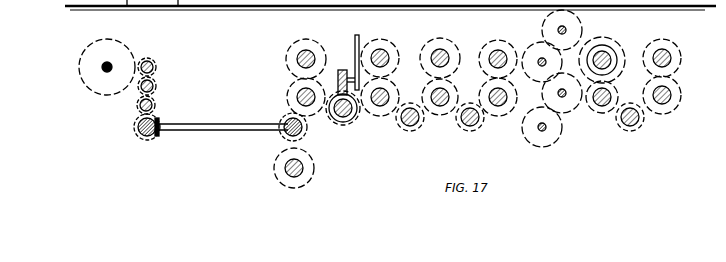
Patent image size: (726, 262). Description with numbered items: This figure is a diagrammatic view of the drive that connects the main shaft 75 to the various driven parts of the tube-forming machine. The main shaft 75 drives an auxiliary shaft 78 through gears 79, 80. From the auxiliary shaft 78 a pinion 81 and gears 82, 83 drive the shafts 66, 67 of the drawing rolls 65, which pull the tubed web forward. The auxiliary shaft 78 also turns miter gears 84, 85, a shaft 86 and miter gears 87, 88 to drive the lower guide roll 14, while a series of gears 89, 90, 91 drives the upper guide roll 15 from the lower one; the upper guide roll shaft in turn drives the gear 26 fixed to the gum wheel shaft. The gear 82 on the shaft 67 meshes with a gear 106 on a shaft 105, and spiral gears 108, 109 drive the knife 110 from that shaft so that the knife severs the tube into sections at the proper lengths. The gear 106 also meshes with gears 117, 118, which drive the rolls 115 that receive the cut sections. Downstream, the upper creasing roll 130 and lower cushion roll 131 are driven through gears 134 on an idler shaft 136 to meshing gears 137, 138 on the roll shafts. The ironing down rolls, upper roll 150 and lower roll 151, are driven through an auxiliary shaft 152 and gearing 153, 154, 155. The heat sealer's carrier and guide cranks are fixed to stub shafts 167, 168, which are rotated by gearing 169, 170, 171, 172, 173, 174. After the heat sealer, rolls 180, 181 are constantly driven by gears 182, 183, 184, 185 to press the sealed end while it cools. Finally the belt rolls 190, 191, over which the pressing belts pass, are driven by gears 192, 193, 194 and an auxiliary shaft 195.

The gear 26 is at (85, 50).
The upper guide roll 15 is at (159, 53).
The gear 91 is at (157, 67).
The gear 90 is at (157, 86).
The gear 89 is at (156, 105).
The miter gear 88 is at (148, 138).
The lower guide roll 14 is at (157, 138).
The miter gear 87 is at (158, 133).
The shaft 86 is at (205, 125).
The upper drawing roll shaft 66 is at (305, 54).
The gear 83 is at (320, 45).
The lower drawing roll shaft 67 is at (289, 86).
The drawing rolls 65 is at (303, 95).
The gear 80 is at (292, 129).
The auxiliary shaft 78 is at (292, 129).
The miter gear 85 is at (292, 138).
The miter gear 84 is at (305, 138).
The pinion 81 is at (301, 128).
The gear 79 is at (296, 168).
The main shaft 75 is at (296, 169).
The shaft 105 is at (354, 125).
The gear 106 is at (354, 125).
The spiral gear 108 is at (353, 116).
The gear 82 is at (341, 72).
The spiral gear 109 is at (343, 70).
The knife 110 is at (362, 56).
The rolls 115 is at (408, 87).
The gear 118 is at (397, 57).
The gearing 153 is at (421, 128).
The idler shaft 136 is at (416, 128).
The gear 134 is at (401, 113).
The gear 117 is at (393, 87).
The gear 137 is at (393, 87).
The gear 138 is at (397, 74).
The upper creasing roll 130 is at (442, 40).
The lower cushion roll 131 is at (455, 82).
The auxiliary shaft 152 is at (470, 115).
The gearing 154 is at (458, 92).
The upper ironing roll 150 is at (493, 49).
The gearing 155 is at (487, 50).
The lower ironing roll 151 is at (498, 117).
The gearing 169 is at (503, 112).
The stub shaft 168 is at (549, 86).
The gearing 171 is at (549, 86).
The gearing 170 is at (568, 24).
The gearing 173 is at (539, 50).
The gearing 174 is at (544, 31).
The stub shaft 167 is at (558, 99).
The gearing 172 is at (563, 113).
The gear 184 is at (612, 49).
The upper roll 180 is at (606, 50).
The lower roll 181 is at (616, 119).
The gear 185 is at (616, 119).
The gear 182 is at (625, 89).
The auxiliary shaft 195 is at (646, 131).
The gear 192 is at (646, 121).
The gear 183 is at (673, 52).
The roll 190 is at (678, 52).
The gear 194 is at (681, 52).
The roll 191 is at (677, 102).
The gear 193 is at (680, 106).